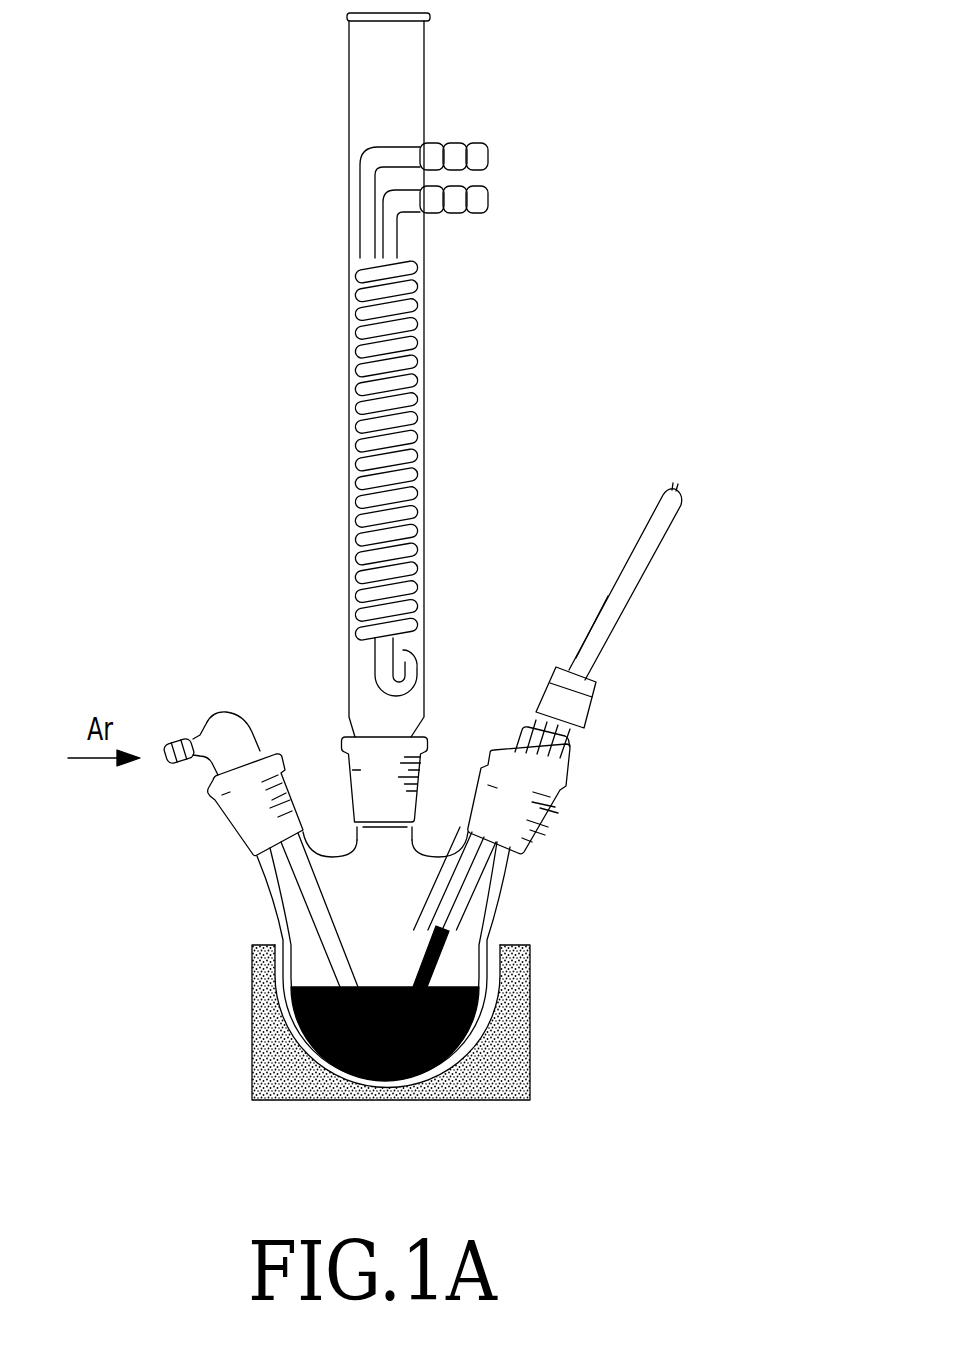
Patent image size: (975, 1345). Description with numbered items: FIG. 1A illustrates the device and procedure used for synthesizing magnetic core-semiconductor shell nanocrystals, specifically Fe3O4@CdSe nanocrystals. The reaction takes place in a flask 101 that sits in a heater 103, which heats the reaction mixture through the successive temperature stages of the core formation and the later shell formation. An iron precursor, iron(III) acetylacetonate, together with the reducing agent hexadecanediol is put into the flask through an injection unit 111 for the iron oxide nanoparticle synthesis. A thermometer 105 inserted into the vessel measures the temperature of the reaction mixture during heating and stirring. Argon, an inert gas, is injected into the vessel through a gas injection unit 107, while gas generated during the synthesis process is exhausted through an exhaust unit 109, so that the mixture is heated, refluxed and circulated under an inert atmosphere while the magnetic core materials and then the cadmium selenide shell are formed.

The reaction vessel (flask) 101 is at (478, 917).
The heater 103 is at (503, 1050).
The thermometer 105 is at (633, 597).
The gas injection unit 107 is at (165, 762).
The exhaust unit 109 is at (480, 145).
The injection unit 111 is at (492, 195).